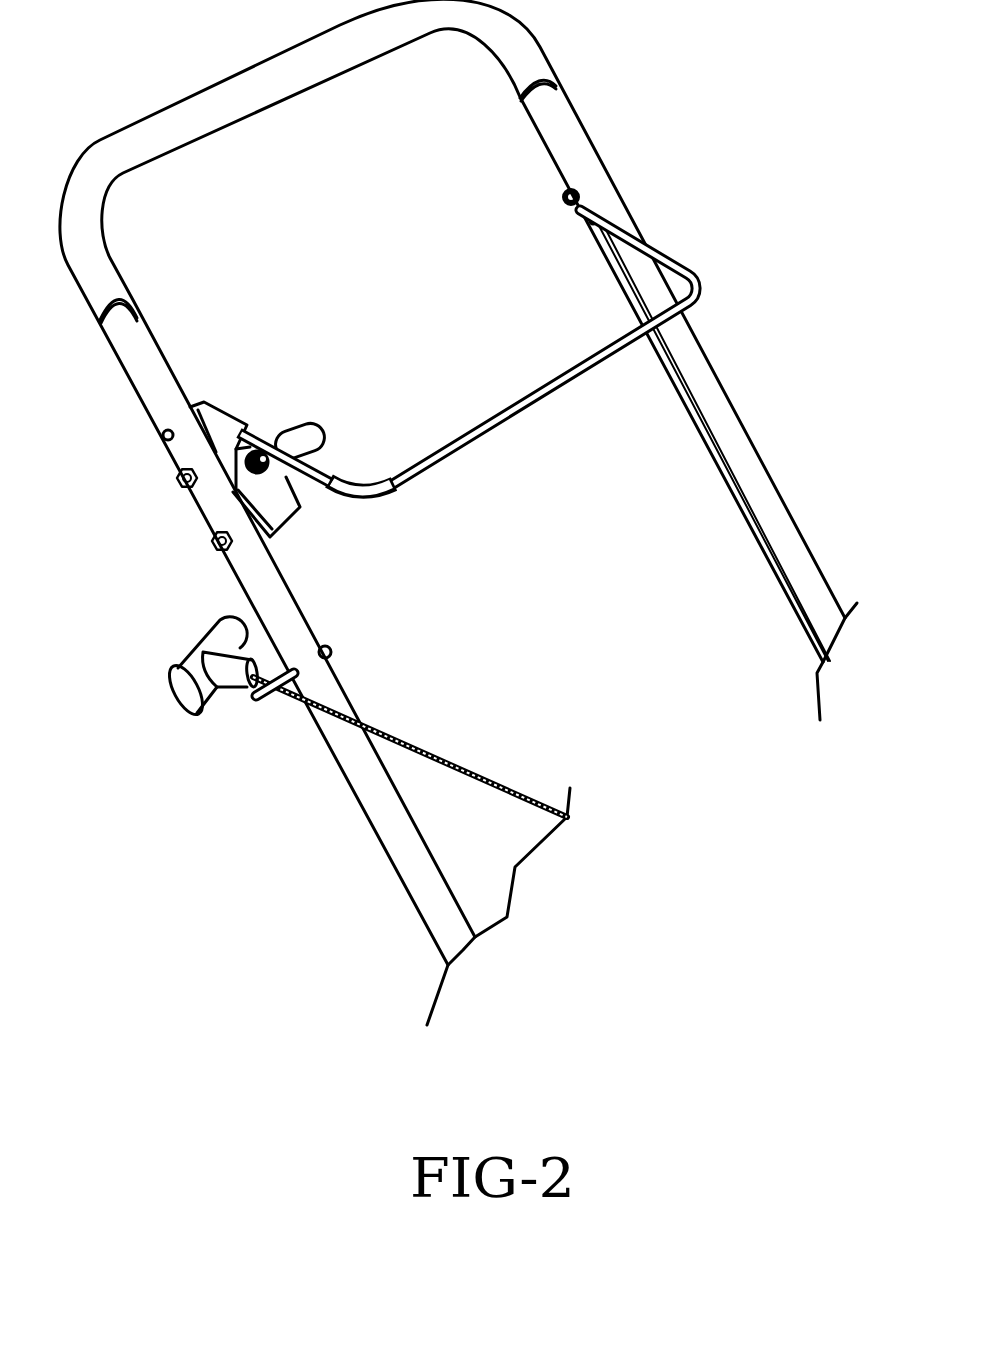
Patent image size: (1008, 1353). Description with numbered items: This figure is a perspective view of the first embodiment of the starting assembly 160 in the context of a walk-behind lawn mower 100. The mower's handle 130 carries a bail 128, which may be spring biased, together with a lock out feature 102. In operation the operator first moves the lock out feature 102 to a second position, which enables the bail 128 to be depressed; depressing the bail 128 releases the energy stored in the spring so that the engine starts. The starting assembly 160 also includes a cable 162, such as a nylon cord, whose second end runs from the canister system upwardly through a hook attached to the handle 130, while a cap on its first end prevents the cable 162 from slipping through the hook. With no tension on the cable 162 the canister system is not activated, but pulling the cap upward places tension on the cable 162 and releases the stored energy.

The lawn mower 100 is at (762, 416).
The lock out feature 102 is at (307, 437).
The bail 128 is at (683, 270).
The handle 130 is at (93, 253).
The starting assembly 160 is at (185, 645).
The cable 162 is at (452, 760).